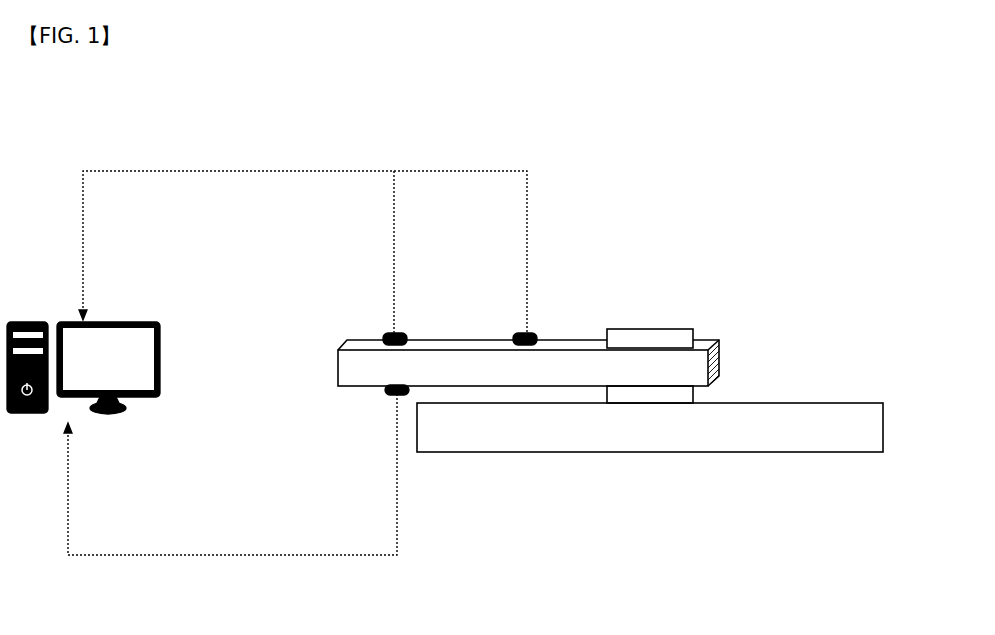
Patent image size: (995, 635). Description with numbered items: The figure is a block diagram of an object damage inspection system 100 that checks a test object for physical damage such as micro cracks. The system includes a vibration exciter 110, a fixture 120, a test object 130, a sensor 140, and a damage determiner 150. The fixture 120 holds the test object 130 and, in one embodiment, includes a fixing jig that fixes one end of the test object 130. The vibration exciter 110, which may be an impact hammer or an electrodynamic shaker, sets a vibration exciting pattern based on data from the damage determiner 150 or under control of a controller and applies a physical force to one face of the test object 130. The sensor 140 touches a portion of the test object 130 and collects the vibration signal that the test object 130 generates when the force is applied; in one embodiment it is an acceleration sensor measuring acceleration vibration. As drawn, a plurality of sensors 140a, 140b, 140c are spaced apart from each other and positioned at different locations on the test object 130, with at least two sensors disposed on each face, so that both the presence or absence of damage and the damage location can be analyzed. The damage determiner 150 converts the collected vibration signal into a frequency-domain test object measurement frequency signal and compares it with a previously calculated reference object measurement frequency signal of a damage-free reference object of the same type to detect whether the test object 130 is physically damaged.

The object damage inspection system 100 is at (433, 109).
The vibration exciter 110 is at (665, 412).
The fixture 120 is at (688, 322).
The test object 130 is at (571, 368).
The sensor 140 is at (486, 337).
The sensor 140a is at (438, 323).
The sensor 140b is at (567, 322).
The sensor 140c is at (359, 409).
The damage determiner 150 is at (110, 351).